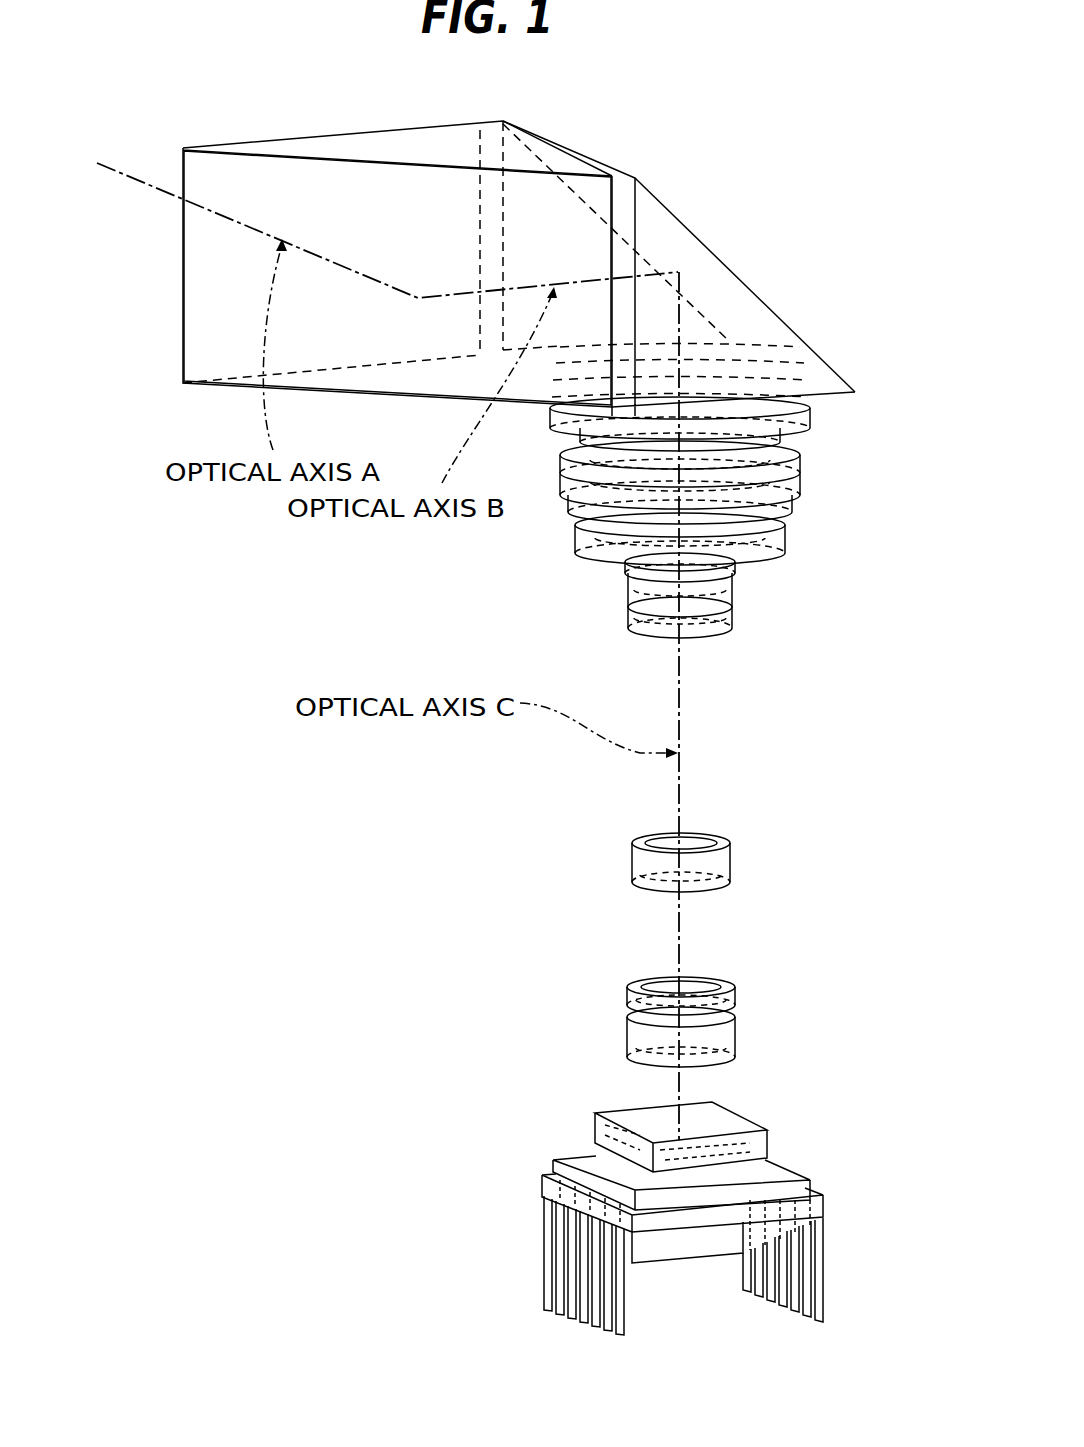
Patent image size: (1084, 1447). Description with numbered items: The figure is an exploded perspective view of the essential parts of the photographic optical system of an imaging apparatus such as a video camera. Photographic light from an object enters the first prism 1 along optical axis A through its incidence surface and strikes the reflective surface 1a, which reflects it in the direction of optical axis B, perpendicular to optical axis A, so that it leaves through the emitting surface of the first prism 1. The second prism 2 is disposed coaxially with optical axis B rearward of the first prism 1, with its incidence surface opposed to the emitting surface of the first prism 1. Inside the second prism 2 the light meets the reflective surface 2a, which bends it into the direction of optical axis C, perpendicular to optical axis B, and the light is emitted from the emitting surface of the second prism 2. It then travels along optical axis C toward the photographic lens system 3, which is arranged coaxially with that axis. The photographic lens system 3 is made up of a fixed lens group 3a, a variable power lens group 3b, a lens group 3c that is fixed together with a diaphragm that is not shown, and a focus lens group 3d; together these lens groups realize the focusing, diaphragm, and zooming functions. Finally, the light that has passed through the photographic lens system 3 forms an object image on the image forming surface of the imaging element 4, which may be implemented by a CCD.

The first prism 1 is at (440, 135).
The reflective surface 1a is at (293, 178).
The second prism 2 is at (668, 208).
The reflective surface 2a is at (727, 290).
The photographic lens system 3 is at (732, 709).
The fixed lens group 3a is at (814, 400).
The variable power lens group 3b is at (814, 551).
The lens group fixed together with a diaphragm 3c is at (814, 828).
The focus lens group 3d is at (746, 1021).
The imaging element 4 is at (543, 1190).